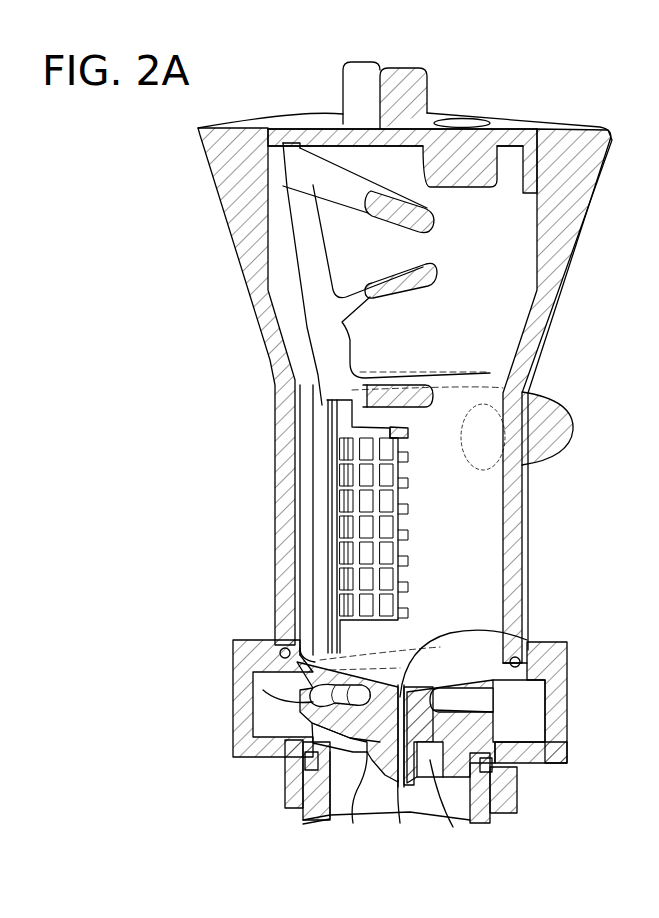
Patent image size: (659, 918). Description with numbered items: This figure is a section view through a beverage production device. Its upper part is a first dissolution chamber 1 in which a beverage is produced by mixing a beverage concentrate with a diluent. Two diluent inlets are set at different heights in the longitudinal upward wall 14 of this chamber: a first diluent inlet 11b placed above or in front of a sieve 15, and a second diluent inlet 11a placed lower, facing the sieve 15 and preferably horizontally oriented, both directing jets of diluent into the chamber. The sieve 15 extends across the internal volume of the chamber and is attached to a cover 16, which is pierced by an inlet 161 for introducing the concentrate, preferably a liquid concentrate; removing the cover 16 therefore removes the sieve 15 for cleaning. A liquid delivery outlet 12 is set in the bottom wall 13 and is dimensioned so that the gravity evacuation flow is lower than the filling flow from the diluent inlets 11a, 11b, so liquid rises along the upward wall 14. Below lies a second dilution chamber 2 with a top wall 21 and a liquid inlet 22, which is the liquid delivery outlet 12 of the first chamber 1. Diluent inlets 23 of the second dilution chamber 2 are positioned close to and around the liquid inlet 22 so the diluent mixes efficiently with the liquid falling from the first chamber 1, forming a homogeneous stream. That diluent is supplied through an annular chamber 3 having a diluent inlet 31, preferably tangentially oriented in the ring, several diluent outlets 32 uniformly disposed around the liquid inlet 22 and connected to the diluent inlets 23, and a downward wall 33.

The first dissolution chamber 1 is at (183, 123).
The second dilution chamber 2 is at (183, 700).
The annular chamber 3 is at (557, 710).
The second diluent inlet 11a is at (307, 585).
The first diluent inlet 11b is at (553, 432).
The liquid delivery outlet 12 is at (433, 668).
The bottom wall 13 is at (562, 656).
The longitudinal upward wall 14 is at (525, 550).
The sieve 15 is at (350, 513).
The cover 16 is at (529, 127).
The inlet 161 is at (464, 120).
The top wall 21 is at (487, 766).
The liquid inlet 22 is at (400, 790).
The diluent inlets 23 is at (367, 760).
The diluent inlet 31 is at (302, 694).
The diluent outlets 32 is at (477, 740).
The downward wall 33 is at (510, 802).